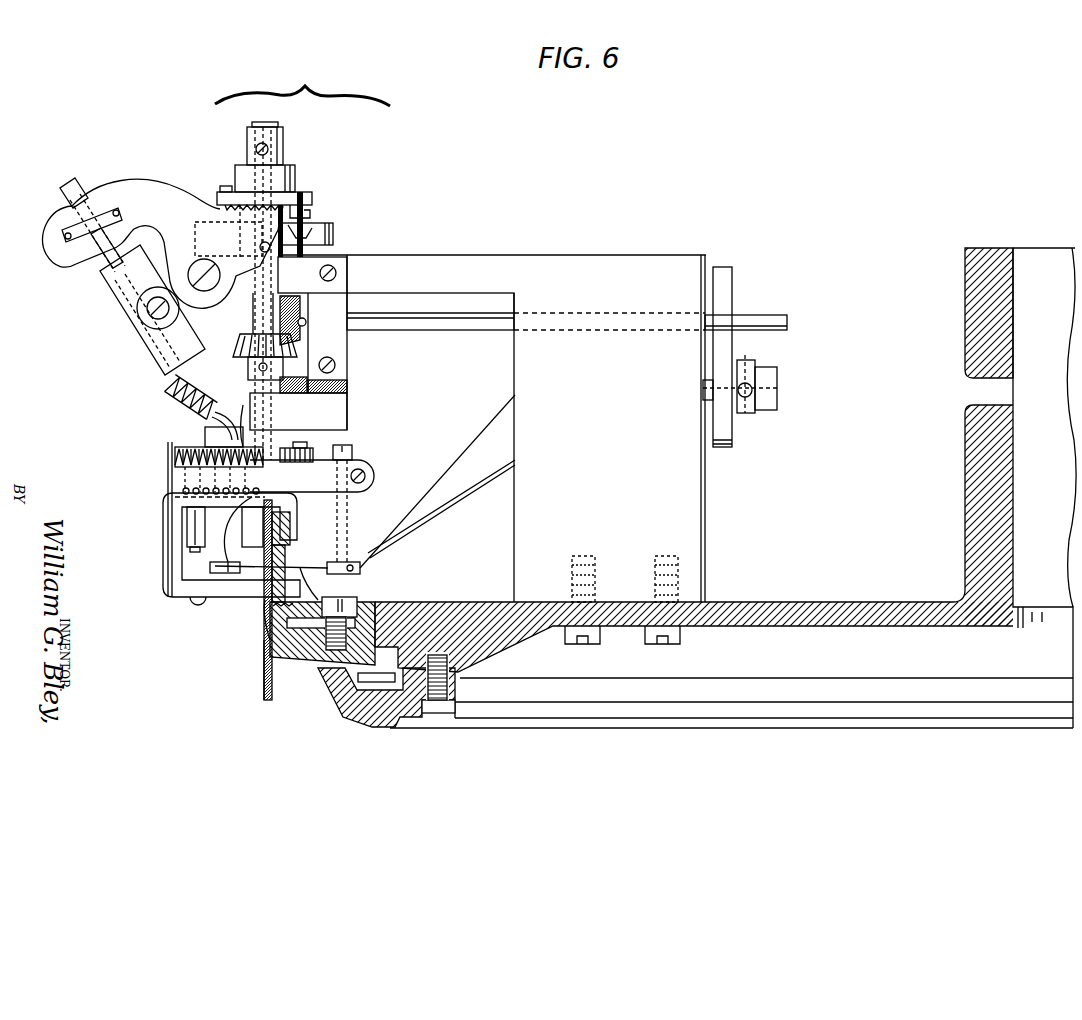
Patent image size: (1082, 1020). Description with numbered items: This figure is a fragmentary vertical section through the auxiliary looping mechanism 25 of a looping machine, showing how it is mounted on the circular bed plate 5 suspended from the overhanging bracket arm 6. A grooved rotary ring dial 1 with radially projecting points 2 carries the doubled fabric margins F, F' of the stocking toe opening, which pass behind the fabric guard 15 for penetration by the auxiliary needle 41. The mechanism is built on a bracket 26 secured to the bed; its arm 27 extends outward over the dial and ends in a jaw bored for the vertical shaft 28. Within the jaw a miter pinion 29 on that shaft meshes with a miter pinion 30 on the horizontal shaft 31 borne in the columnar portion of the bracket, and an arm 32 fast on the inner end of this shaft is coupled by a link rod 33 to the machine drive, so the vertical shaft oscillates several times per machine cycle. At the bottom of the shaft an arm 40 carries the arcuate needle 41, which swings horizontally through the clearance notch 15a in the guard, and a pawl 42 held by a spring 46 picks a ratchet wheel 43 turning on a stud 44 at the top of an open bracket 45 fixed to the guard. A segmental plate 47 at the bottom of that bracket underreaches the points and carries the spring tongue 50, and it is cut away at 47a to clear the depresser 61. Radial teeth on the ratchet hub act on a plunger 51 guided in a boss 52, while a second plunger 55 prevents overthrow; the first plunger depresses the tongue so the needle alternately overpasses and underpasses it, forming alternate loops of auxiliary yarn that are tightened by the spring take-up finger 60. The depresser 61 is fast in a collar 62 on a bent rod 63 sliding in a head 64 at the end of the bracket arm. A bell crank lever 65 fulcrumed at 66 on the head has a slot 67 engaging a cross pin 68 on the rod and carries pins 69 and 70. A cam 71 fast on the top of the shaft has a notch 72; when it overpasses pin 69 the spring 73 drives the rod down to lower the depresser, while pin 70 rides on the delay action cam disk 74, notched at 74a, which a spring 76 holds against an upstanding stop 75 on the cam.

The rotary ring dial 1 is at (310, 655).
The points 2 is at (250, 590).
The bed plate 5 is at (822, 612).
The bracket arm 6 is at (975, 274).
The fabric guard 15 is at (326, 566).
The clearance notch 15a is at (306, 578).
The auxiliary mechanism 25 is at (302, 83).
The bracket 26 is at (688, 512).
The bracket arm 27 is at (442, 262).
The vertical shaft 28 is at (253, 311).
The miter pinion 29 is at (242, 338).
The miter pinion 30 is at (283, 302).
The horizontal shaft 31 is at (450, 323).
The arm 32 is at (722, 448).
The link rod 33 is at (748, 362).
The arm 40 is at (322, 490).
The auxiliary arcuate needle 41 is at (336, 548).
The pawl 42 is at (288, 446).
The ratchet wheel 43 is at (210, 433).
The stud 44 is at (238, 410).
The open bracket 45 is at (162, 560).
The spring 46 is at (174, 462).
The segmental plate 47 is at (222, 585).
The cut-away 47a is at (258, 612).
The spring tongue 50 is at (208, 568).
The plunger 51 is at (254, 527).
The boss 52 is at (258, 487).
The plunger 55 is at (186, 520).
The spring take-up finger 60 is at (476, 494).
The depresser 61 is at (213, 557).
The collar 62 is at (166, 488).
The bent rod 63 is at (100, 268).
The head 64 is at (108, 300).
The bell crank lever 65 is at (158, 190).
The fulcrum 66 is at (200, 262).
The slot 67 is at (52, 260).
The cross pin 68 is at (92, 215).
The pin 69 is at (262, 246).
The pin 70 is at (258, 200).
The cam 71 is at (334, 233).
The notch 72 is at (312, 325).
The spring 73 is at (166, 391).
The delay action cam disk 74 is at (218, 196).
The notch 74a is at (300, 196).
The stop 75 is at (224, 188).
The spring 76 is at (310, 214).
The fabric half portion F is at (265, 616).
The fabric half portion F' is at (238, 670).